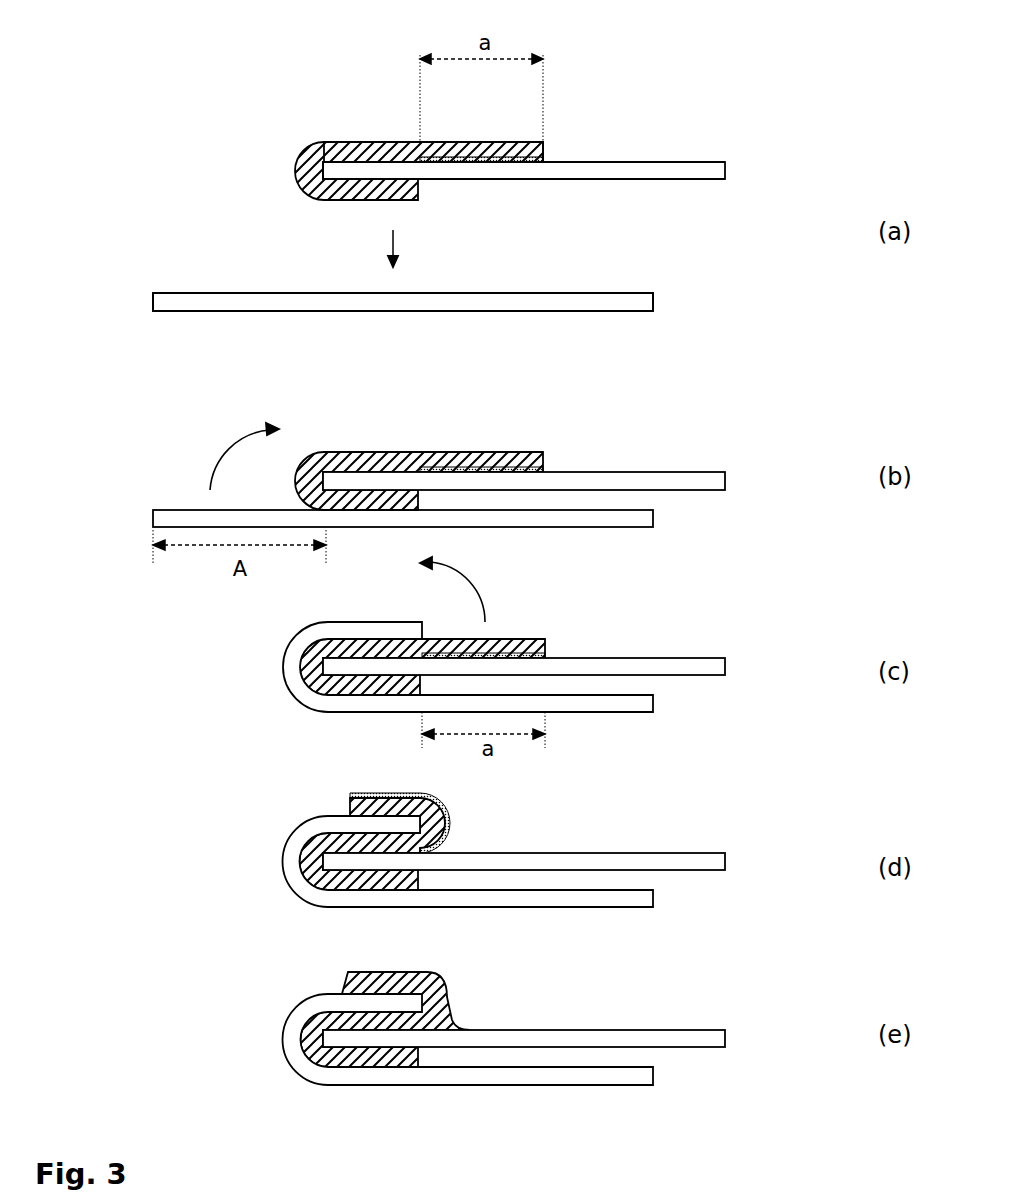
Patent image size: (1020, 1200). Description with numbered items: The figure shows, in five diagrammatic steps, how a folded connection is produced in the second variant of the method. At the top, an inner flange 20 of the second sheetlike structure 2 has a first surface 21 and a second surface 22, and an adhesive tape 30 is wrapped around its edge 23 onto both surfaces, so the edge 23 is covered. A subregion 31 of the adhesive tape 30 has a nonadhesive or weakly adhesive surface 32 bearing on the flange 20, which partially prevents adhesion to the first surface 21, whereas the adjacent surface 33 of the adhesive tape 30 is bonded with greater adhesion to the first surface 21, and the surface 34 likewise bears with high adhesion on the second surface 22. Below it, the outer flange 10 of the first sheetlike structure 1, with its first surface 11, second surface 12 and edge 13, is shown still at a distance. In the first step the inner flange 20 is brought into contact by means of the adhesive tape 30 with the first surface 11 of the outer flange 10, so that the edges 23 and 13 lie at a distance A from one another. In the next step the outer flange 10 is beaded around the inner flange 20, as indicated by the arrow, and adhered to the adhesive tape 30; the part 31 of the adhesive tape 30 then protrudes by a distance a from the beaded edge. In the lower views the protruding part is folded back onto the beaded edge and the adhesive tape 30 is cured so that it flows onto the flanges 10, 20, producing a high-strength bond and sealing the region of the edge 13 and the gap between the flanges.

The first sheetlike structure 1 is at (655, 303).
The outer flange 10 is at (204, 303).
The first surface of the outer flange 11 is at (442, 293).
The second surface of the outer flange 12 is at (498, 312).
The edge of the outer flange 13 is at (153, 312).
The second sheetlike structure 2 is at (712, 172).
The inner flange 20 is at (373, 168).
The first surface of the inner flange 21 is at (585, 161).
The second surface of the inner flange 22 is at (591, 179).
The edge of the inner flange 23 is at (327, 170).
The adhesive tape 30 is at (340, 140).
The subregion of the adhesive tape 31 is at (495, 144).
The nonadhesive or weakly adhesive surface 32 is at (453, 160).
The surface of the adhesive tape 33 is at (380, 162).
The surface of the adhesive tape 34 is at (458, 157).